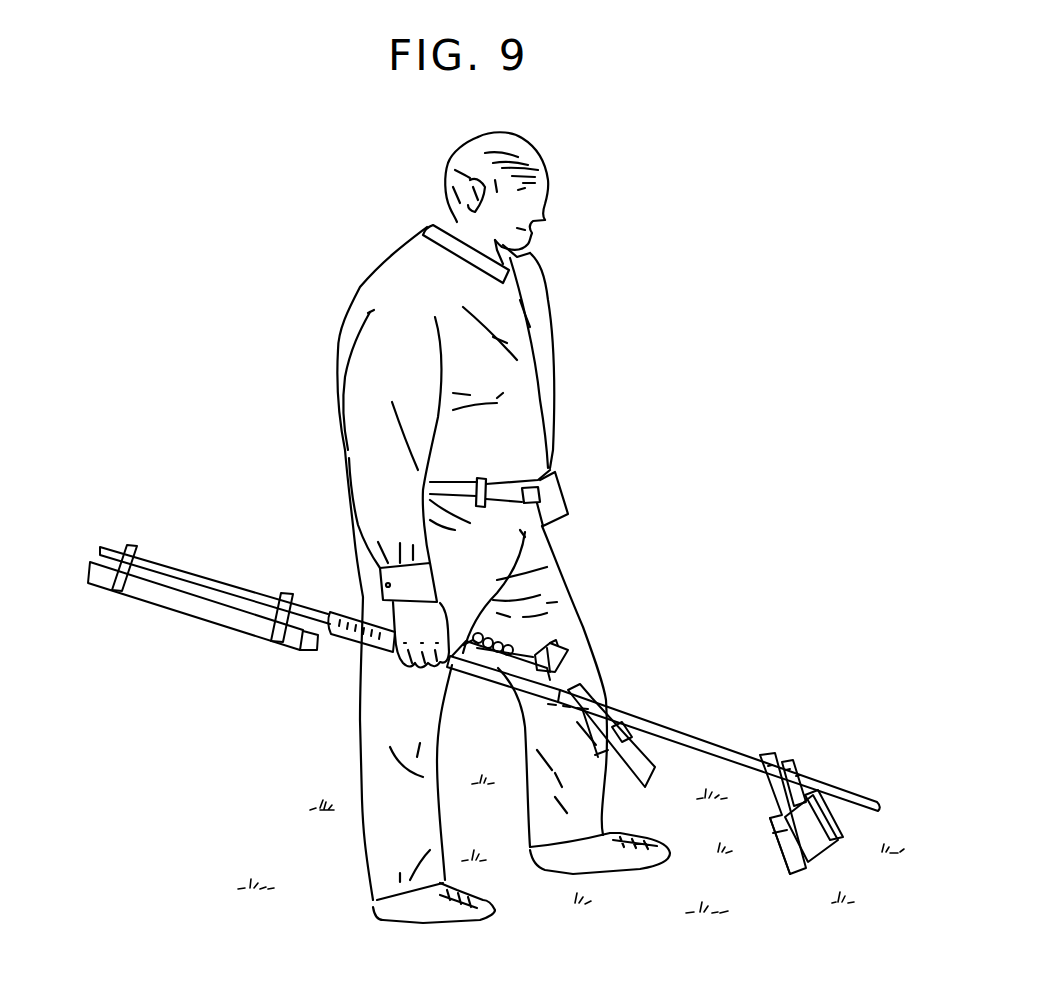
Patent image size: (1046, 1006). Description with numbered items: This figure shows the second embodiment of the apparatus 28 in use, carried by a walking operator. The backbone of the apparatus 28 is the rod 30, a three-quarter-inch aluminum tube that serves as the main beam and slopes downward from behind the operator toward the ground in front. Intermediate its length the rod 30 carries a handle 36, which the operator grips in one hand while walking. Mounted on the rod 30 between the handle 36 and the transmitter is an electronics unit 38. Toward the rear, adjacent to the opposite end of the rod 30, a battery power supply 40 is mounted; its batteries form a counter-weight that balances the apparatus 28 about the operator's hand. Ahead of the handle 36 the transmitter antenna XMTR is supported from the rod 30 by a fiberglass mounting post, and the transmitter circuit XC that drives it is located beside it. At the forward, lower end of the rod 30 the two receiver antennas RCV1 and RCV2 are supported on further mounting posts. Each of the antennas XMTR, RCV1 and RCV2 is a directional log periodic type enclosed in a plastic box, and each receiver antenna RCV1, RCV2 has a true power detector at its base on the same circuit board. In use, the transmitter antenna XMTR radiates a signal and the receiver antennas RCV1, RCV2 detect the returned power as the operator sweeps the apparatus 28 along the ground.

The apparatus 28 is at (690, 713).
The rod 30 is at (827, 790).
The handle 36 is at (357, 640).
The electronics unit 38 is at (576, 671).
The battery power supply 40 is at (190, 595).
The transmitter antenna XMTR is at (633, 734).
The transmitter circuit XC is at (580, 724).
The receiver antenna RCV1 is at (844, 838).
The receiver antenna RCV2 is at (784, 860).